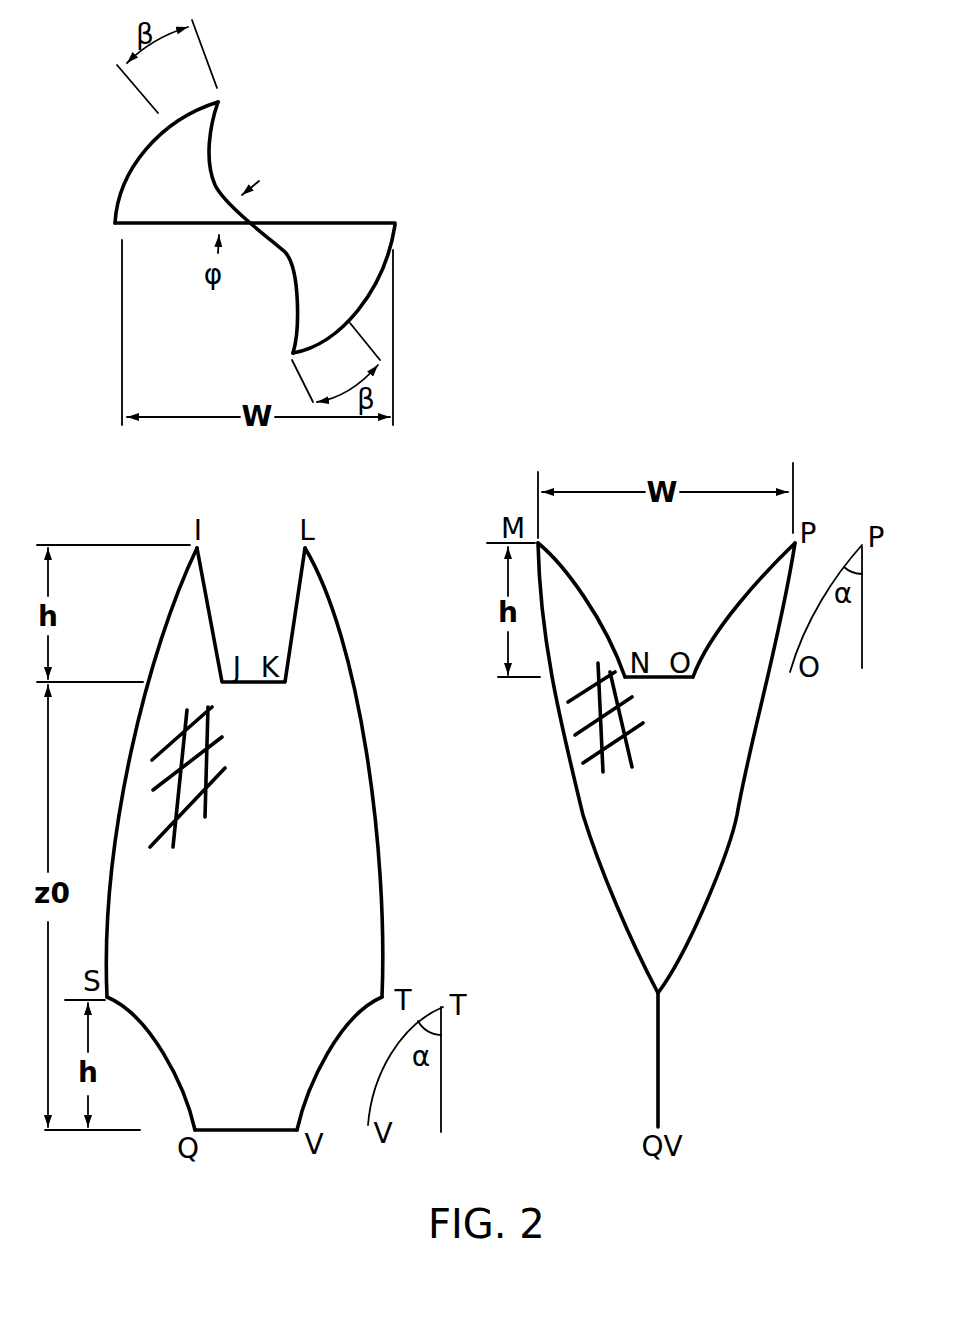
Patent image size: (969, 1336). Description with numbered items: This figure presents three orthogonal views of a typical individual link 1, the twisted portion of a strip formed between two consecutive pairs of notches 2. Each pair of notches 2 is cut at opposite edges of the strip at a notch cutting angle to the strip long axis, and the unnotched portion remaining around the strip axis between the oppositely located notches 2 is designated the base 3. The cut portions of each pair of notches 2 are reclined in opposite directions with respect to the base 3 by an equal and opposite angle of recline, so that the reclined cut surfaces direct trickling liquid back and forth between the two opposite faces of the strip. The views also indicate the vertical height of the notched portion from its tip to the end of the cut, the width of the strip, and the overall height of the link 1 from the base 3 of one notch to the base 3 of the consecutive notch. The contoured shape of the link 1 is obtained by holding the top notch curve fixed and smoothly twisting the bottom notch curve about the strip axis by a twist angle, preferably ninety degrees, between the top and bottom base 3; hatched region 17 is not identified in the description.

The link 1 is at (366, 833).
The notch 2 is at (212, 152).
The base 3 is at (277, 240).
The hatched flank region 17 is at (212, 758).